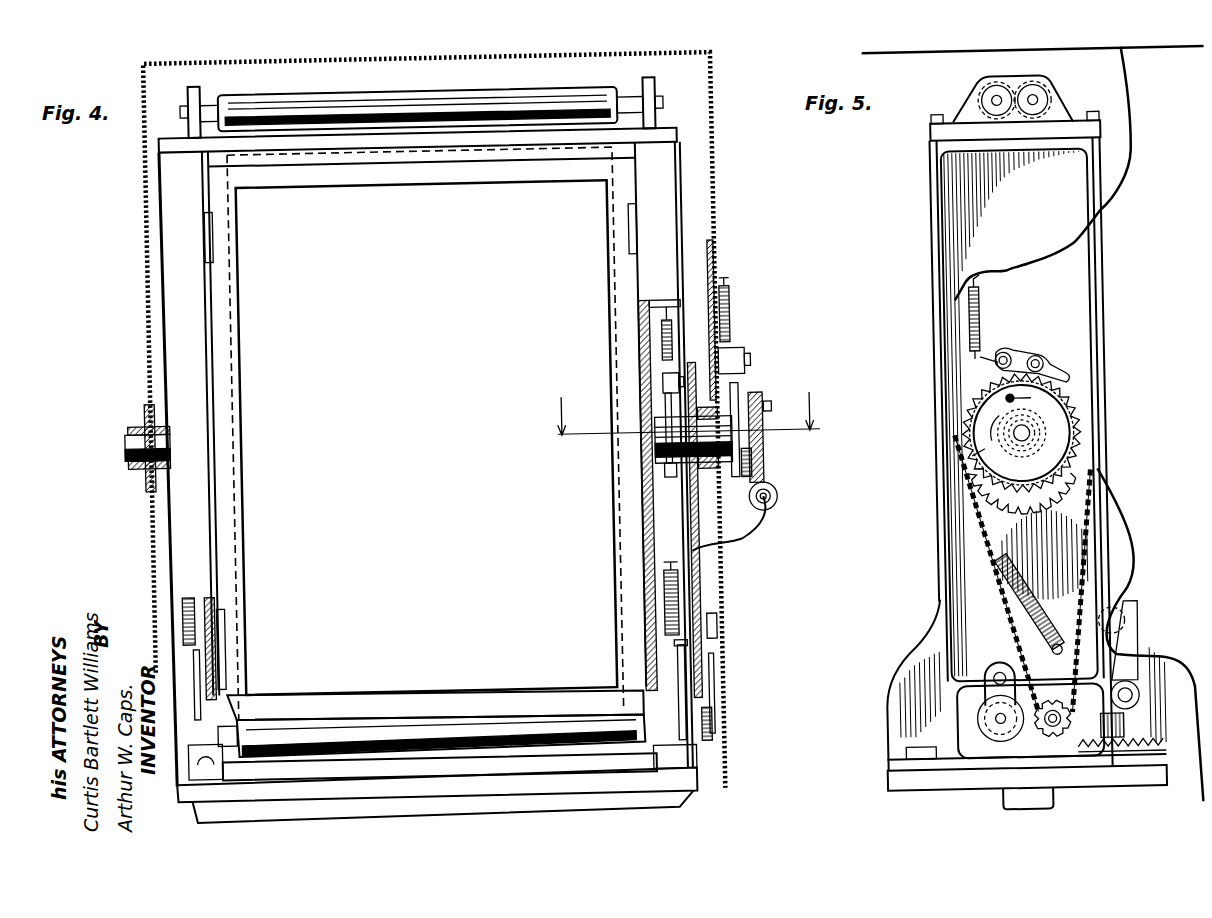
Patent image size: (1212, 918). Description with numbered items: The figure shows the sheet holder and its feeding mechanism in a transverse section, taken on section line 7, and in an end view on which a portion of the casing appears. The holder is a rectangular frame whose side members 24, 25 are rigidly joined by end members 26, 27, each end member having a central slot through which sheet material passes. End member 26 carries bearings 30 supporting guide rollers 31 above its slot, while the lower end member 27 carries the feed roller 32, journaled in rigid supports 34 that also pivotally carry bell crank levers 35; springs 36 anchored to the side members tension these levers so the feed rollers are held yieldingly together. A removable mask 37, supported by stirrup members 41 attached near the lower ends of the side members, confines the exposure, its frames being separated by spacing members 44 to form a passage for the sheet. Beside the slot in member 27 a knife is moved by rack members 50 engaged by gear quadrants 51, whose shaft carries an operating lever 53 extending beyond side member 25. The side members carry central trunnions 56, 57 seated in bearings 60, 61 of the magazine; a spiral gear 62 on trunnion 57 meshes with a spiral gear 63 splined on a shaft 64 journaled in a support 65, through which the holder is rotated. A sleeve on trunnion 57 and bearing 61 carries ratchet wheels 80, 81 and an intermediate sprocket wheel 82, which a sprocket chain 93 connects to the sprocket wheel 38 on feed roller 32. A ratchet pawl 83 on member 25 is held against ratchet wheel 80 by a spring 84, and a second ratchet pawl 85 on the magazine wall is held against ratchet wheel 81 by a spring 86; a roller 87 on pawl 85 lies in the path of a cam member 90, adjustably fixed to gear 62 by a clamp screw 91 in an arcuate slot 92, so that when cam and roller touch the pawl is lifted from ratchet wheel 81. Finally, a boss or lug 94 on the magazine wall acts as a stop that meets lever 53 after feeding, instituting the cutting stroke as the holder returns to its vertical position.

In FIG. 4, the side member 24 is at (170, 316).
In FIG. 4, the side member 25 is at (690, 240).
In FIG. 5, the side member 25 is at (946, 198).
In FIG. 4, the end member 26 is at (690, 140).
In FIG. 4, the end member 27 is at (688, 800).
In FIG. 5, the end member 27 is at (900, 780).
In FIG. 4, the bearings 30 is at (195, 98).
In FIG. 5, the bearings 30 is at (1032, 80).
In FIG. 4, the guide rollers 31 is at (486, 94).
In FIG. 5, the guide rollers 31 is at (990, 90).
In FIG. 4, the roller 32 is at (390, 730).
In FIG. 5, the roller 32 is at (972, 712).
In FIG. 4, the rigid supports 34 is at (695, 780).
In FIG. 5, the rigid supports 34 is at (985, 772).
In FIG. 4, the bell crank levers 35 is at (196, 660).
In FIG. 5, the bell crank levers 35 is at (990, 662).
In FIG. 4, the springs 36 is at (190, 610).
In FIG. 5, the springs 36 is at (1032, 605).
In FIG. 4, the mask 37 is at (354, 180).
In FIG. 4, the sprocket wheel 38 is at (708, 740).
In FIG. 5, the sprocket wheel 38 is at (1040, 732).
In FIG. 4, the stirrup members 41 is at (289, 676).
In FIG. 4, the spacing members 44 is at (600, 465).
In FIG. 5, the rack members 50 is at (1135, 760).
In FIG. 5, the gear quadrants 51 is at (1118, 722).
In FIG. 4, the operating lever 53 is at (710, 690).
In FIG. 5, the operating lever 53 is at (1132, 665).
In FIG. 4, the trunnion 56 is at (128, 448).
In FIG. 5, the trunnion 57 is at (1032, 432).
In FIG. 4, the bearing 60 is at (146, 420).
In FIG. 4, the bearing 61 is at (741, 400).
In FIG. 4, the spiral gear 62 is at (764, 480).
In FIG. 5, the spiral gear 62 is at (975, 458).
In FIG. 4, the spiral gear 63 is at (777, 505).
In FIG. 4, the shaft 64 is at (772, 525).
In FIG. 4, the support 65 is at (740, 540).
In FIG. 4, the section line 7- 7 is at (685, 419).
In FIG. 4, the ratchet wheel 80 is at (660, 482).
In FIG. 5, the ratchet wheel 81 is at (1080, 447).
In FIG. 5, the sprocket wheel 82 is at (1075, 480).
In FIG. 4, the ratchet pawl 83 is at (662, 385).
In FIG. 4, the spring 84 is at (662, 334).
In FIG. 4, the ratchet pawl 85 is at (738, 352).
In FIG. 5, the ratchet pawl 85 is at (1020, 345).
In FIG. 4, the spring 86 is at (733, 300).
In FIG. 5, the spring 86 is at (985, 302).
In FIG. 4, the roller 87 is at (752, 364).
In FIG. 5, the roller 87 is at (1047, 358).
In FIG. 4, the cam member 90 is at (766, 400).
In FIG. 5, the cam member 90 is at (1072, 395).
In FIG. 4, the clamp screw 91 is at (773, 412).
In FIG. 5, the clamp screw 91 is at (1008, 398).
In FIG. 5, the arcuate slot 92 is at (990, 418).
In FIG. 4, the sprocket chain 93 is at (689, 520).
In FIG. 5, the sprocket chain 93 is at (968, 528).
In FIG. 4, the boss or lug 94 is at (714, 630).
In FIG. 5, the boss or lug 94 is at (1122, 610).